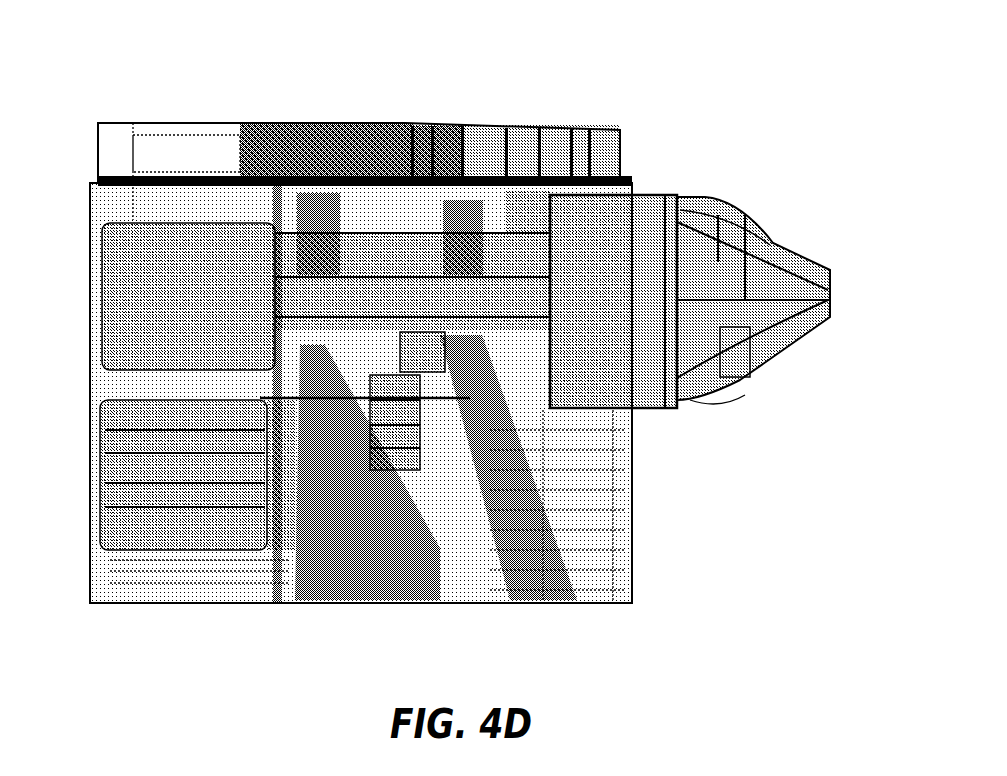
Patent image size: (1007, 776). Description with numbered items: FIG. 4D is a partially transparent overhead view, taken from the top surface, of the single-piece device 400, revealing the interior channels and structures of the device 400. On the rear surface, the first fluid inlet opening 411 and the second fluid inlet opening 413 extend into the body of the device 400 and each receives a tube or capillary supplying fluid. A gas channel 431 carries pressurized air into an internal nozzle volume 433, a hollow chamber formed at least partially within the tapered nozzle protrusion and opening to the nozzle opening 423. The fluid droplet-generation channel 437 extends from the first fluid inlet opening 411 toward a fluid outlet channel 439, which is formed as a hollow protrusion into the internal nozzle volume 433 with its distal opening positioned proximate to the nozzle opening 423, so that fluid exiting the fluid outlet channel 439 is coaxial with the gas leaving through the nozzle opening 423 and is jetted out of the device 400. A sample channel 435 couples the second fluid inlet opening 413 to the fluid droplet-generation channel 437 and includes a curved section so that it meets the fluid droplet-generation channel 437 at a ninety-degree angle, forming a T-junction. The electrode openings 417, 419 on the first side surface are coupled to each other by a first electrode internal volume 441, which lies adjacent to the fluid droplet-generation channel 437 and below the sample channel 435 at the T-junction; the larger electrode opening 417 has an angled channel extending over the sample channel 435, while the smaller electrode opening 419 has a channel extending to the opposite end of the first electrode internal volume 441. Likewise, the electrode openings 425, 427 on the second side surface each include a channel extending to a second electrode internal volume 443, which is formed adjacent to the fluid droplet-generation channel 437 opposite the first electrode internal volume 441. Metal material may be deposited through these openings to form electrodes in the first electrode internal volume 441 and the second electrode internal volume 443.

The single-piece device 400 is at (118, 102).
The first fluid inlet opening 411 is at (103, 295).
The second fluid inlet opening 413 is at (103, 488).
The electrode opening 417 is at (327, 590).
The electrode opening 419 is at (555, 600).
The nozzle opening 423 is at (828, 285).
The electrode opening 425 is at (352, 132).
The electrode opening 427 is at (468, 132).
The gas channel 431 is at (533, 238).
The internal nozzle volume 433 is at (745, 258).
The sample channel 435 is at (385, 465).
The fluid droplet-generation channel 437 is at (585, 290).
The fluid outlet channel 439 is at (793, 250).
The first electrode internal volume 441 is at (425, 345).
The second electrode internal volume 443 is at (385, 257).